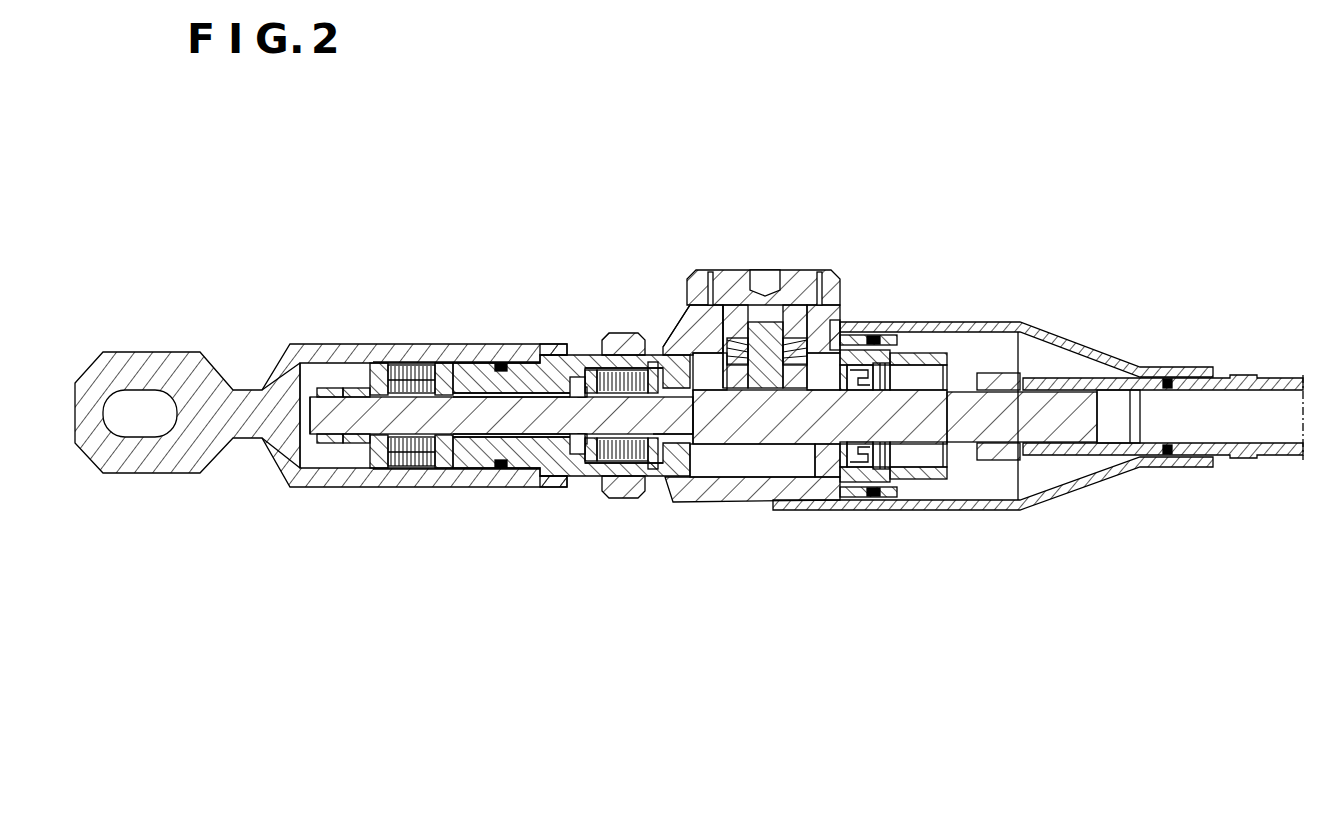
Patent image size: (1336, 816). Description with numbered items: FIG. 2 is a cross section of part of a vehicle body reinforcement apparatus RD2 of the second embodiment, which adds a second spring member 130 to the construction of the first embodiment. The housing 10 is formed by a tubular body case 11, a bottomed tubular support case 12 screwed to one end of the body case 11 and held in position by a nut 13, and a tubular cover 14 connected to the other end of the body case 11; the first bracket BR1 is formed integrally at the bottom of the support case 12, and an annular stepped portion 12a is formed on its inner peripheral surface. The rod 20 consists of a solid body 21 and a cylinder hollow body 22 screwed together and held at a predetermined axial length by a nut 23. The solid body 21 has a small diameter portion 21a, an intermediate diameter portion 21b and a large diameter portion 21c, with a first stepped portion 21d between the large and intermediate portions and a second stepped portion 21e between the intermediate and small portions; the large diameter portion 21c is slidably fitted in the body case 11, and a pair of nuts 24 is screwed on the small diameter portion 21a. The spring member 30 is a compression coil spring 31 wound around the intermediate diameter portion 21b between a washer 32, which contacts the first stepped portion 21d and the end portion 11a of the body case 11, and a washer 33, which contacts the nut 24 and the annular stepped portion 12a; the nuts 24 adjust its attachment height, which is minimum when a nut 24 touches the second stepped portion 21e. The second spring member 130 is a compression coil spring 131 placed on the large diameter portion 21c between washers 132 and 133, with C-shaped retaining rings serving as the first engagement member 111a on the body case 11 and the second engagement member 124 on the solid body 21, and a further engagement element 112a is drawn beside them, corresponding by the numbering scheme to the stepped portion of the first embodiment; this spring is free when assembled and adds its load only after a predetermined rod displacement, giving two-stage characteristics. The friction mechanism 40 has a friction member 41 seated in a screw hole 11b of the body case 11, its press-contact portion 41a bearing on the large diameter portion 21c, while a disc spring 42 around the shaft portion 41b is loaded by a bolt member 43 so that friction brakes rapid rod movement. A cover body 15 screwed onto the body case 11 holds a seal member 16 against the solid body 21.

The first bracket BR1 is at (192, 352).
The vehicle body reinforcement apparatus RD2 is at (575, 255).
The housing 10 is at (748, 502).
The body case 11 is at (682, 478).
The end portion 11a is at (490, 362).
The screw hole 11b is at (712, 302).
The support case 12 is at (278, 475).
The annular stepped portion 12a is at (372, 361).
The nut 13 is at (622, 499).
The cover 14 is at (962, 512).
The cover body 15 is at (918, 482).
The seal member 16 is at (870, 486).
The rod 20 is at (790, 460).
The solid body 21 is at (752, 447).
The small diameter portion 21a is at (324, 443).
The intermediate diameter portion 21b is at (356, 443).
The large diameter portion 21c is at (492, 434).
The first stepped portion 21d is at (658, 447).
The second stepped portion 21e is at (330, 388).
The cylinder hollow body 22 is at (1252, 458).
The nut 23 is at (1003, 462).
The nut 24 is at (304, 388).
The spring member 30 is at (402, 368).
The compression coil spring 31 is at (418, 378).
The washer 32 is at (446, 362).
The washer 33 is at (378, 362).
The friction mechanism 40 is at (787, 268).
The friction member 41 is at (810, 372).
The press-contact portion 41a is at (716, 322).
The shaft portion 41b is at (764, 335).
The disc spring 42 is at (803, 346).
The bolt member 43 is at (821, 300).
The member 111a is at (644, 353).
The cylinder key 112a is at (581, 385).
The member 124 is at (553, 344).
The second spring member 130 is at (614, 462).
The compression coil spring 131 is at (592, 463).
The washer 132 is at (653, 470).
The washer 133 is at (576, 454).